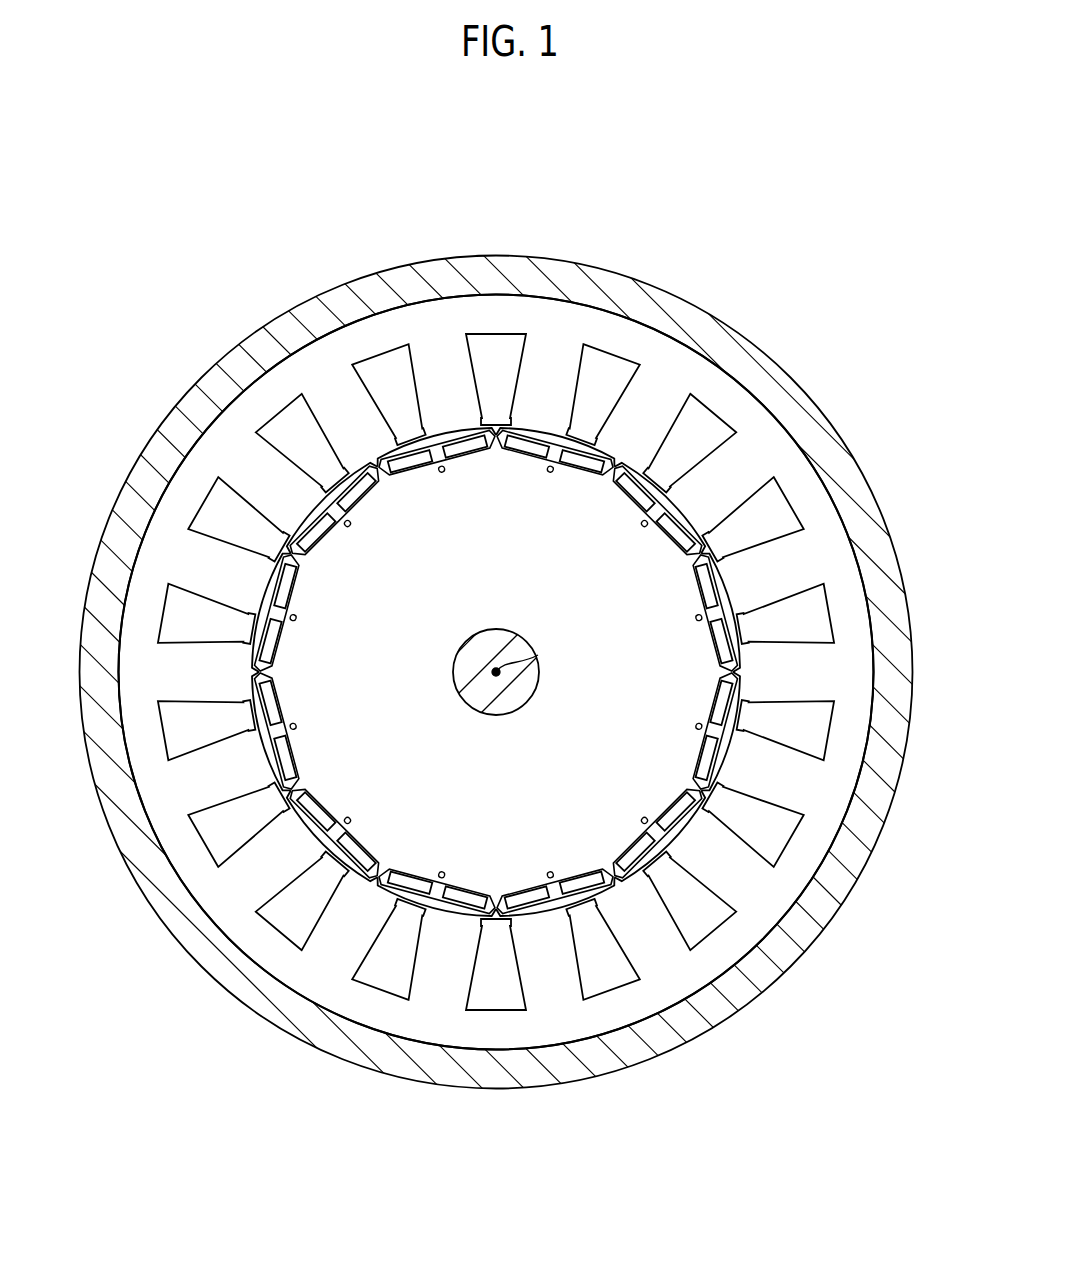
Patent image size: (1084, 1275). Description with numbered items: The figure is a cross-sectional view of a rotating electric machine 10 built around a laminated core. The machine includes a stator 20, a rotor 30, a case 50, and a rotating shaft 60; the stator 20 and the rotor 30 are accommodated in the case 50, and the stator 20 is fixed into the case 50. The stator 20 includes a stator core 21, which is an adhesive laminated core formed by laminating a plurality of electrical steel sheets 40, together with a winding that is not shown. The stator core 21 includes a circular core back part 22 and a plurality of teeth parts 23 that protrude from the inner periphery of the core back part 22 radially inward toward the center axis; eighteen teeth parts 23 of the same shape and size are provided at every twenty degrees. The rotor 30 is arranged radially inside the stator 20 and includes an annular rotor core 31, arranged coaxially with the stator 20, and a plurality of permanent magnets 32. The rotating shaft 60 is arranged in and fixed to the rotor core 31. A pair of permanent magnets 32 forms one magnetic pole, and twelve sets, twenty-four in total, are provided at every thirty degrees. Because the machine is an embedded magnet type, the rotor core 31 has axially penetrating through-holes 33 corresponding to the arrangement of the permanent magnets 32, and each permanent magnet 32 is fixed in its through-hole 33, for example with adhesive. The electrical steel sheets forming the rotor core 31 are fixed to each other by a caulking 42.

The rotating electric machine 10 is at (800, 157).
The stator 20 is at (784, 413).
The stator core 21 is at (720, 218).
The core back part 22 is at (690, 360).
The teeth parts 23 is at (578, 360).
The rotor 30 is at (318, 668).
The rotor core 31 is at (395, 865).
The permanent magnets 32 is at (580, 468).
The through-holes 33 is at (527, 898).
The electrical steel sheets 40 is at (276, 385).
The caulking 42 is at (351, 527).
The case 50 is at (840, 463).
The rotating shaft 60 is at (527, 688).